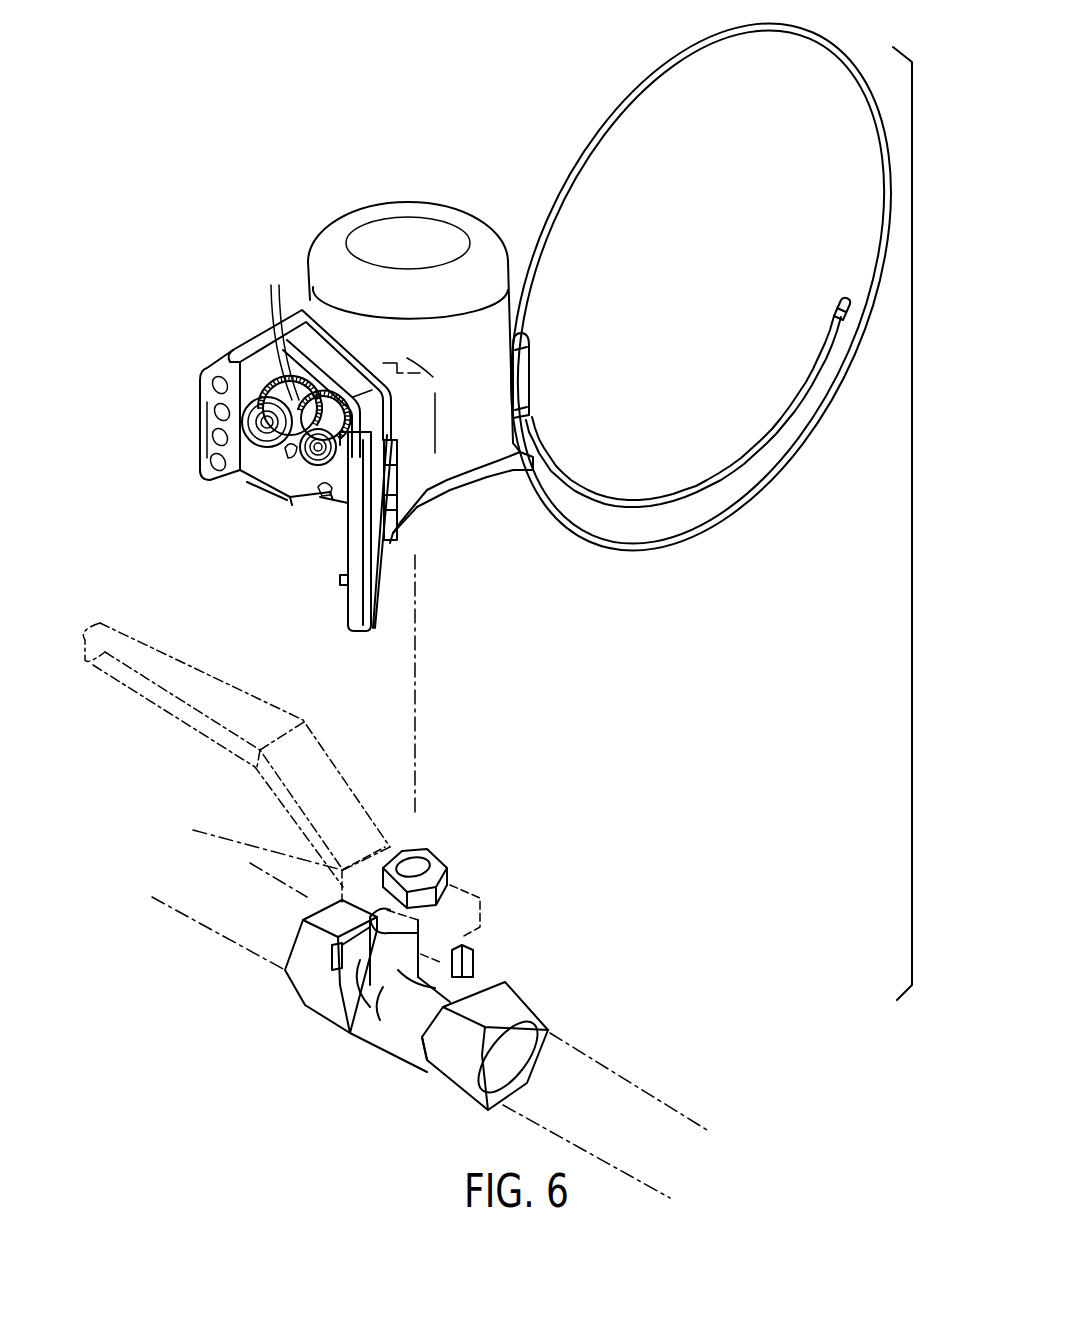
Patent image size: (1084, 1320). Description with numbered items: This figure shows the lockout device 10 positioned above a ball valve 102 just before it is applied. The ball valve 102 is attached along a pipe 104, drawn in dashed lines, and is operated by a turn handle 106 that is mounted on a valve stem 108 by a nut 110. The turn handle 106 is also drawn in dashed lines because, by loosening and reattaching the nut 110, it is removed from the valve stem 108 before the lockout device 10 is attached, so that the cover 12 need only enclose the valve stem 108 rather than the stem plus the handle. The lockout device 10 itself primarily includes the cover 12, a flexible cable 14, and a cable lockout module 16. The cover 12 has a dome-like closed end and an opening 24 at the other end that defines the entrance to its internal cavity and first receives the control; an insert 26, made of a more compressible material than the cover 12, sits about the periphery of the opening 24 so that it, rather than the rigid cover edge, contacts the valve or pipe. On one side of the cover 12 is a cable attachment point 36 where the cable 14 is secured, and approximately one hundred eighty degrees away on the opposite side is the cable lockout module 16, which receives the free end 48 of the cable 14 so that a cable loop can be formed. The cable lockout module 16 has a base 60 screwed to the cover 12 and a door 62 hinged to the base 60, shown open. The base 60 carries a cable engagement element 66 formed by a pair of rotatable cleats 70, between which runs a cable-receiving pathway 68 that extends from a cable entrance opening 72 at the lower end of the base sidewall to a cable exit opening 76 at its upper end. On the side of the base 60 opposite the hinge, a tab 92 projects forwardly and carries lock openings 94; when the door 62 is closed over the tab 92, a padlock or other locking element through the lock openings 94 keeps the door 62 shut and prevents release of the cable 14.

The lockout device 10 is at (283, 182).
The cover 12 is at (412, 233).
The cable 14 is at (566, 196).
The cable lockout module 16 is at (260, 493).
The opening 24 is at (458, 505).
The insert 26 is at (427, 500).
The cable attachment point 36 is at (518, 378).
The free end 48 is at (823, 343).
The base 60 is at (258, 345).
The door 62 is at (350, 630).
The cable engagement element 66 is at (268, 462).
The cable-receiving pathway 68 is at (297, 452).
The rotatable cleats 70 is at (280, 326).
The cable entrance opening 72 is at (322, 487).
The cable exit opening 76 is at (320, 373).
The tab 92 is at (207, 432).
The lock openings 94 is at (216, 383).
The ball valve 102 is at (530, 978).
The pipe 104 is at (613, 1072).
The turn handle 106 is at (197, 725).
The valve stem 108 is at (398, 970).
The nut 110 is at (440, 862).